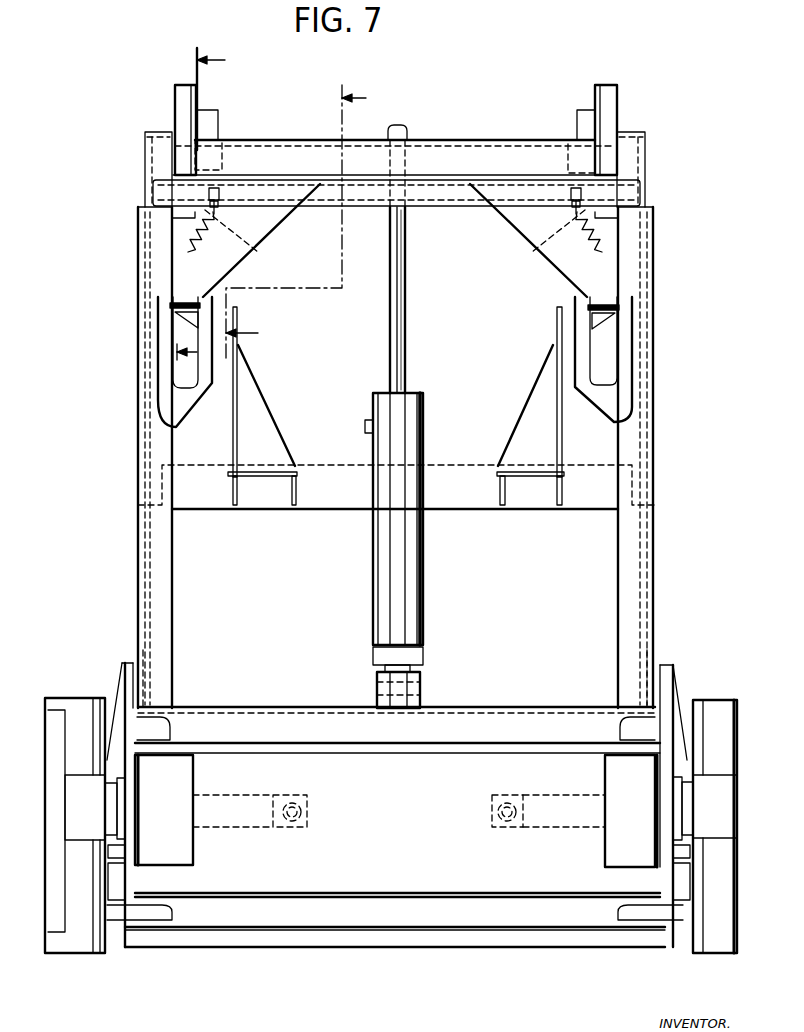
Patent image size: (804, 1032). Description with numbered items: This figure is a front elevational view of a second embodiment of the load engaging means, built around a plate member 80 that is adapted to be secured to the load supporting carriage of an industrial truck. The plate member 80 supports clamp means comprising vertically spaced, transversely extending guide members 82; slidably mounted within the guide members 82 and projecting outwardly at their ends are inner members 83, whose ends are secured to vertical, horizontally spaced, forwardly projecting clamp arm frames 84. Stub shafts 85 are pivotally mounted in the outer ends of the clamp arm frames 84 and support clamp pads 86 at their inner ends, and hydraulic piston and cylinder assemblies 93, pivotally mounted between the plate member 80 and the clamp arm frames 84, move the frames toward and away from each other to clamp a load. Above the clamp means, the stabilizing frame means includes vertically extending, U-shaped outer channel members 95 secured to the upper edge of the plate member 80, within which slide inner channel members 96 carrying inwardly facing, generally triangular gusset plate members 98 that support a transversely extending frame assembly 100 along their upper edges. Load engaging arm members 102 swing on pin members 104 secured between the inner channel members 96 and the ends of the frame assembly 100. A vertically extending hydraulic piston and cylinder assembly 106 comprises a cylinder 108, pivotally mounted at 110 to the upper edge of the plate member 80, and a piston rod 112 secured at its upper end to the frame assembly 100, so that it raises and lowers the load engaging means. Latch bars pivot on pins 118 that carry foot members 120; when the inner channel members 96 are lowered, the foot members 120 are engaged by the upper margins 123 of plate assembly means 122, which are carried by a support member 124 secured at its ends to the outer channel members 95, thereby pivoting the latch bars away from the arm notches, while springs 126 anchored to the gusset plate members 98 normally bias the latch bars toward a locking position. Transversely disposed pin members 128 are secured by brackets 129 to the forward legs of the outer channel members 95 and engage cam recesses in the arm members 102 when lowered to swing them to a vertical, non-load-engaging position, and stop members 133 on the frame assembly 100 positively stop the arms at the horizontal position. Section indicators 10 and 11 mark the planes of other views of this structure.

The section line 10- 10 is at (308, 223).
The section line 11- 11 is at (211, 204).
The plate member 80 is at (397, 824).
The guide members 82 is at (305, 723).
The inner members 83 is at (107, 722).
The clamp arm frames 84 is at (53, 966).
The stub shafts 85 is at (115, 803).
The clamp pads 86 is at (137, 693).
The hydraulic piston and cylinder assemblies 93 is at (245, 822).
The outer channel members 95 is at (138, 555).
The inner channel members 96 is at (143, 135).
The gusset plate members 98 is at (277, 226).
The frame assembly 100 is at (442, 143).
The arm members 102 is at (178, 100).
The pin members 104 is at (147, 162).
The hydraulic piston and cylinder assembly 106 is at (423, 384).
The cylinder 108 is at (413, 610).
The pivotal mounting 110 is at (432, 690).
The piston rod 112 is at (407, 292).
The pins 118 is at (221, 190).
The foot members 120 is at (258, 252).
The plate assembly means 122 is at (258, 428).
The upper margins 123 is at (238, 306).
The support member 124 is at (327, 498).
The springs 126 is at (173, 232).
The pin members 128 is at (183, 303).
The brackets 129 is at (163, 377).
The stop members 133 is at (207, 117).